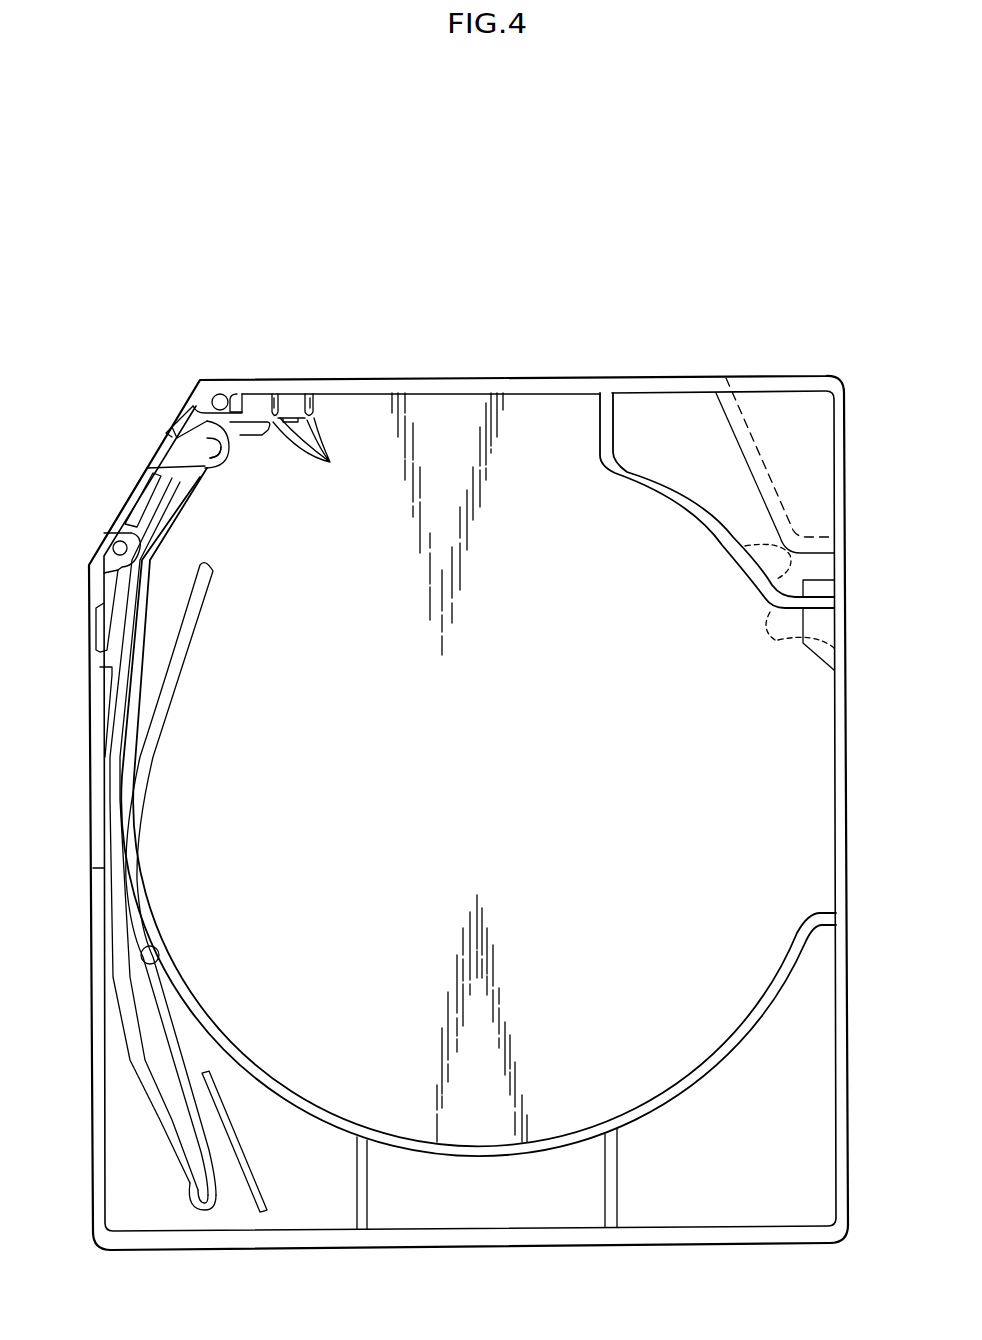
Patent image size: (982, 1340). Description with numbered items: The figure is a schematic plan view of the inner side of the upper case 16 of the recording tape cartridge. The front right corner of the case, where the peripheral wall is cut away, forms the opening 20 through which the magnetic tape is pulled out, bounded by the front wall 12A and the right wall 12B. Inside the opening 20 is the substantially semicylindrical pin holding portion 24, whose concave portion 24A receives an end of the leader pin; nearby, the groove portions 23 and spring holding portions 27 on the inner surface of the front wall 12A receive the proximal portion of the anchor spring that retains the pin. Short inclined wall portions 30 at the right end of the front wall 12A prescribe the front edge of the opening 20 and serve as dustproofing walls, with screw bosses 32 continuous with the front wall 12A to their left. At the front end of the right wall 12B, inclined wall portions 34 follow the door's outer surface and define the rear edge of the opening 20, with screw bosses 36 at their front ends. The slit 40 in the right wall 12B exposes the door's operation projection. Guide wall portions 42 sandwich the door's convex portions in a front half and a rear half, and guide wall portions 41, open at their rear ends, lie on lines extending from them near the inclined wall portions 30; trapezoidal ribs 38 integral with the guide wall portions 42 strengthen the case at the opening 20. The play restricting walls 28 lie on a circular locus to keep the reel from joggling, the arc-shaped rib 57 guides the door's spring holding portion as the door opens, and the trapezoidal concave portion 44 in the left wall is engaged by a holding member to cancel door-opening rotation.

The upper case 16 is at (582, 200).
The front wall 12A is at (515, 378).
The right wall 12B is at (92, 890).
The opening 20 is at (133, 470).
The groove portions 23 is at (262, 417).
The pin holding portions 24 is at (232, 449).
The concave portions 24A is at (207, 455).
The spring holding portions 27 is at (320, 450).
The play restricting walls 28 is at (706, 522).
The inclined wall portions 30 is at (190, 407).
The screw bosses 32 is at (228, 394).
The inclined wall portions 34 is at (117, 612).
The screw bosses 36 is at (110, 545).
The ribs 38 is at (128, 500).
The slit 40 is at (92, 797).
The guide wall portions 41 is at (172, 425).
The guide wall portions 42 is at (158, 1110).
The concave portion 44 is at (790, 637).
The rib 57 is at (268, 1180).